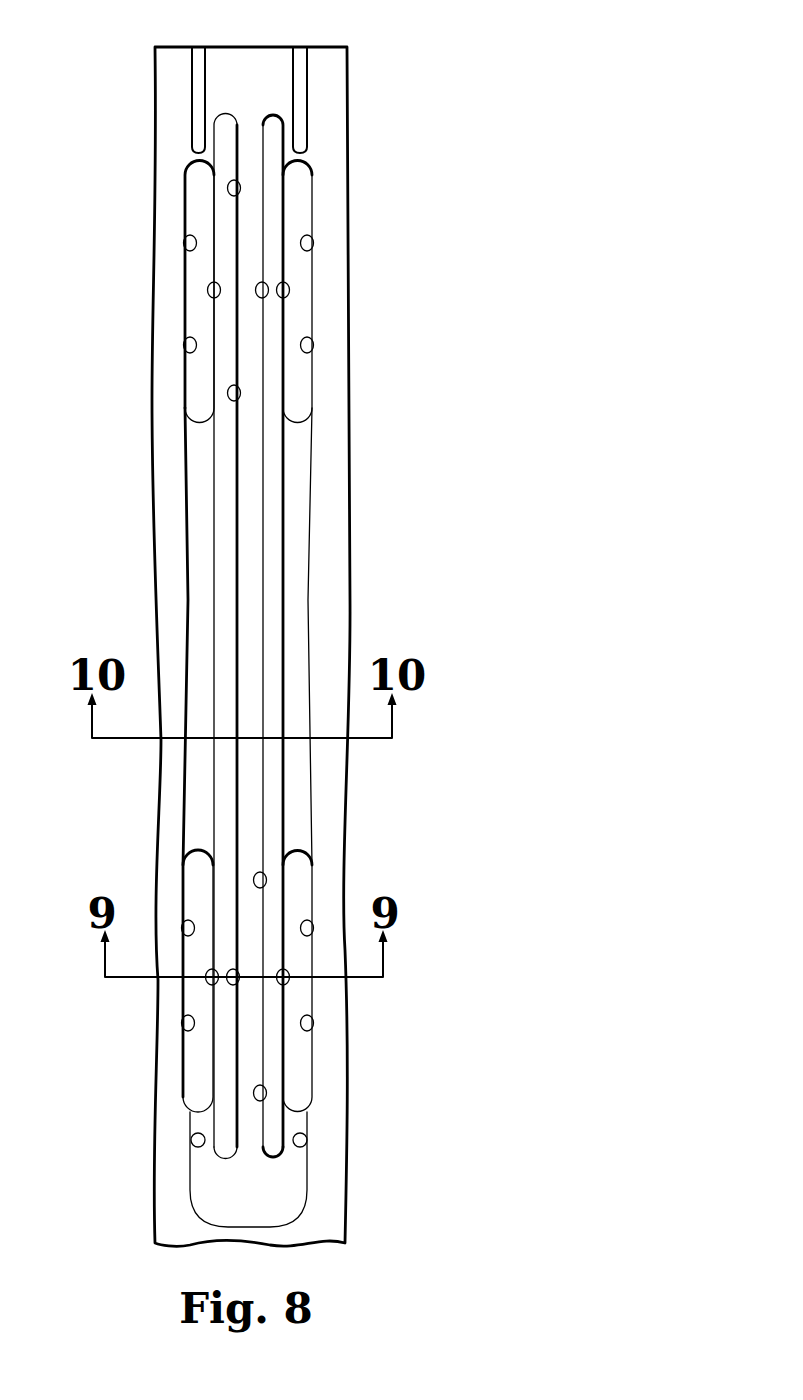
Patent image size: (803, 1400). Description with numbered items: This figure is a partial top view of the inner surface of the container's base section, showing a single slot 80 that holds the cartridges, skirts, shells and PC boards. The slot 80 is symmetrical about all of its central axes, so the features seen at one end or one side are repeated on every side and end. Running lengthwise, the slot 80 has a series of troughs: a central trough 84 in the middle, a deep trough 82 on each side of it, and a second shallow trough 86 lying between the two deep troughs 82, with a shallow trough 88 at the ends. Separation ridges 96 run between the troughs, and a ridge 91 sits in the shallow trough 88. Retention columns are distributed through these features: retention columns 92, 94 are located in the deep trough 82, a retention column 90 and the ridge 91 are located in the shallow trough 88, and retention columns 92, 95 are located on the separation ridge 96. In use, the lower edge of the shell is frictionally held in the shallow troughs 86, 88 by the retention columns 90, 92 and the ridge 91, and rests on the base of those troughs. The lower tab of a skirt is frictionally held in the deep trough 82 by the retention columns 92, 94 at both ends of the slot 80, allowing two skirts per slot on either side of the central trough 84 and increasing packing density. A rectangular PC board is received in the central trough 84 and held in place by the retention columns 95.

The slot 80 is at (397, 529).
The deep trough 82 is at (303, 215).
The central trough 84 is at (247, 166).
The second shallow trough 86 is at (202, 593).
The shallow trough 88 is at (265, 1178).
The retention column 90 is at (193, 1140).
The ridge 91 is at (195, 133).
The retention column 92 is at (216, 292).
The retention column 94 is at (190, 243).
The retention column 95 is at (230, 184).
The separation ridge 96 is at (223, 188).